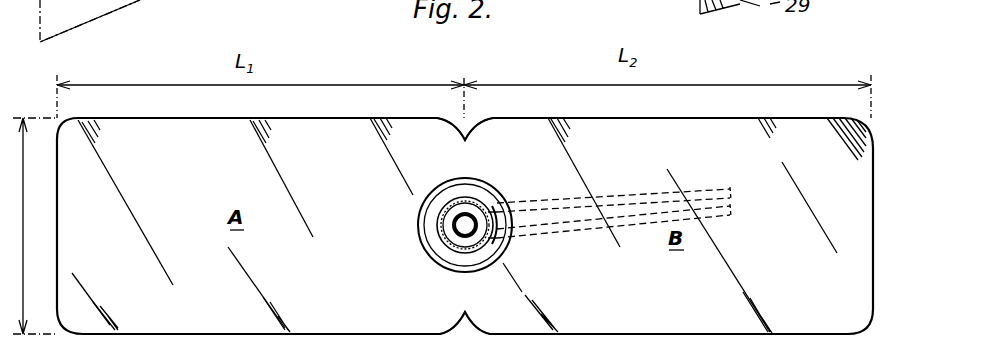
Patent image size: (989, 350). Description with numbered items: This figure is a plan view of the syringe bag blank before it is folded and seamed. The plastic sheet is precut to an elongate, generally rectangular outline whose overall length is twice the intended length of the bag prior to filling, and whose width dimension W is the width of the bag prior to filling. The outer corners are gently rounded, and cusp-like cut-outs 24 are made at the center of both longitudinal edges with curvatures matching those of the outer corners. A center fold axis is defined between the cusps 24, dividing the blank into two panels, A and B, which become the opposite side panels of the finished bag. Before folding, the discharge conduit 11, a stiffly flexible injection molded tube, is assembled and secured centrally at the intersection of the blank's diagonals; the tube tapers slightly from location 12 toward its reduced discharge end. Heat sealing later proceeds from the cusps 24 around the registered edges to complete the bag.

The width dimension W is at (23, 226).
The cusp-like cut-outs 24 is at (465, 130).
The location 12 is at (498, 180).
The discharge conduit 11 is at (575, 228).